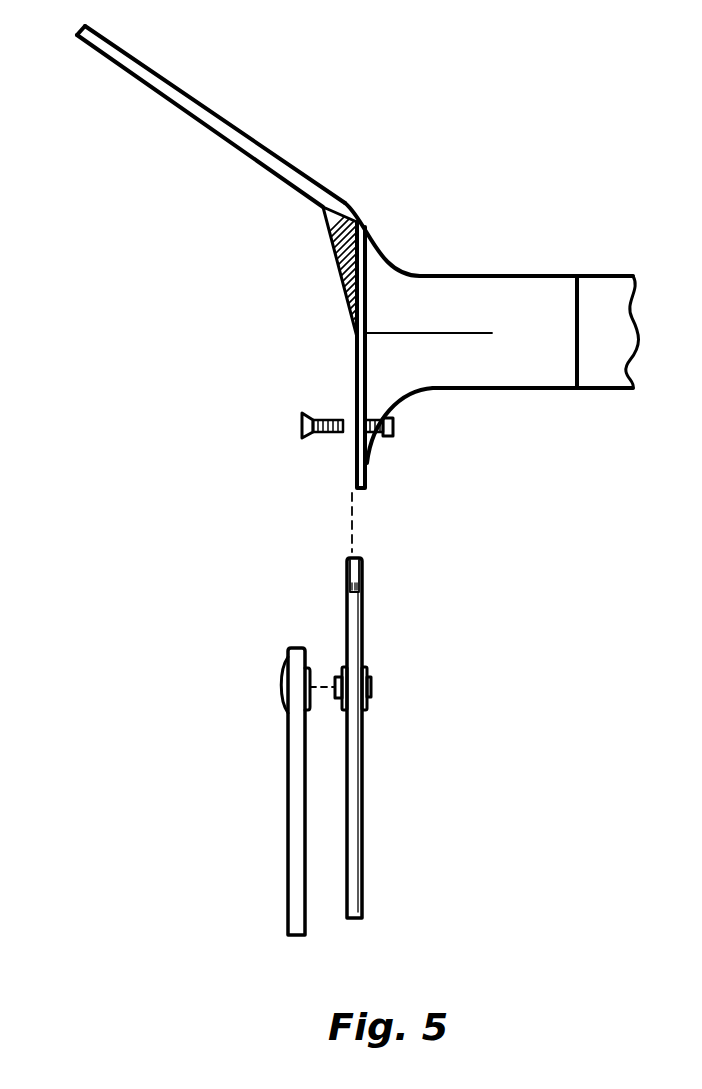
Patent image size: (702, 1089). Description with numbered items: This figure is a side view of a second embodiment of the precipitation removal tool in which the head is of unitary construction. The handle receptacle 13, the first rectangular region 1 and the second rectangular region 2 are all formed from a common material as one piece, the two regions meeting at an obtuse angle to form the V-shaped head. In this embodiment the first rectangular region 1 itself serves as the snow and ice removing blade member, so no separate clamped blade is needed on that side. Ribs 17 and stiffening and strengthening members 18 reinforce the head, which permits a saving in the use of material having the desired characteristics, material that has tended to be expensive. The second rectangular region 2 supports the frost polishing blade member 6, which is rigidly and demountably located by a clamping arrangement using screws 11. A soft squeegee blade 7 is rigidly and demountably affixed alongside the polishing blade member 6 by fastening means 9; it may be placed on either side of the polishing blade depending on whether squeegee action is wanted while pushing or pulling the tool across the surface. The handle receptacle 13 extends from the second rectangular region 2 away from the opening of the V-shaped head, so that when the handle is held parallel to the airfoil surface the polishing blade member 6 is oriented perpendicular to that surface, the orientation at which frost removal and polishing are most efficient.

The first rectangular region 1 is at (300, 187).
The ribs 17 is at (340, 258).
The second rectangular region 2 is at (355, 362).
The stiffening and strengthening members 18 is at (397, 328).
The handle receptacle 13 is at (475, 292).
The screws 11 is at (393, 427).
The fastening means 9 is at (372, 687).
The squeegee blade 7 is at (288, 830).
The frost polishing blade member 6 is at (363, 828).